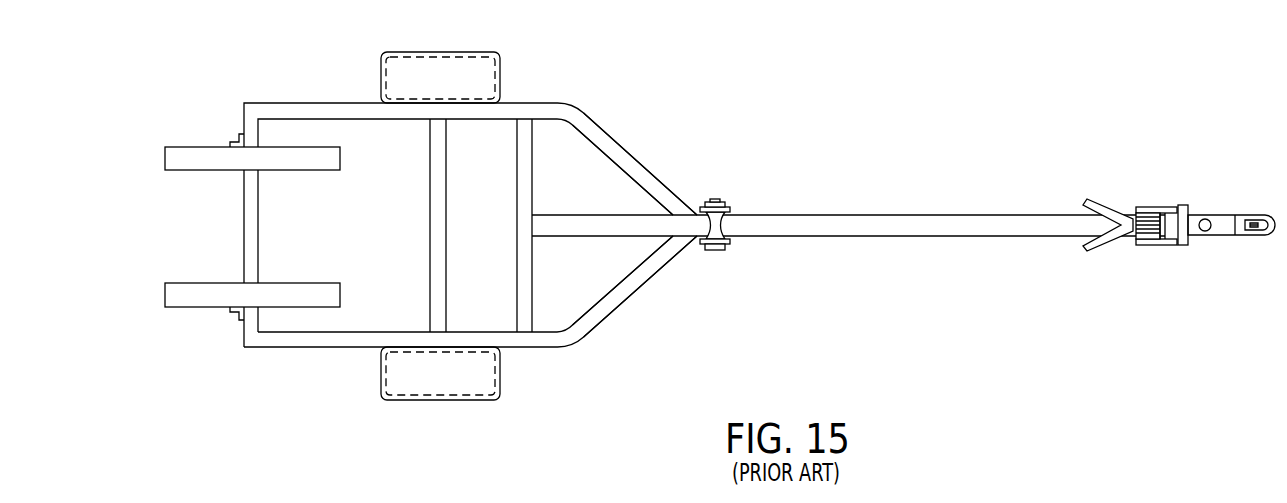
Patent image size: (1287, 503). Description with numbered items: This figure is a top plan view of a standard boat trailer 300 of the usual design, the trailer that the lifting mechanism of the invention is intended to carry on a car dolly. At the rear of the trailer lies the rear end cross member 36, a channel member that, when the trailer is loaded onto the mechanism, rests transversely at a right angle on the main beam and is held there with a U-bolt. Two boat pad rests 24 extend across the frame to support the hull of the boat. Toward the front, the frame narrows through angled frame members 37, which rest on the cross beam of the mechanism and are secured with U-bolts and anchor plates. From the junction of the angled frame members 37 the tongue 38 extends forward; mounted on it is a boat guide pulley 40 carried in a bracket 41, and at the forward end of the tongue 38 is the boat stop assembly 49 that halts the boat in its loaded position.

The boat pad rests 24 is at (165, 152).
The rear end cross member 36 is at (244, 207).
The angled frame members 37 is at (627, 150).
The tongue 38 is at (805, 237).
The boat guide pulley 40 is at (722, 222).
The bracket 41 is at (719, 199).
The boat stop assembly 49 is at (1183, 205).
The standard boat trailer 300 is at (692, 226).